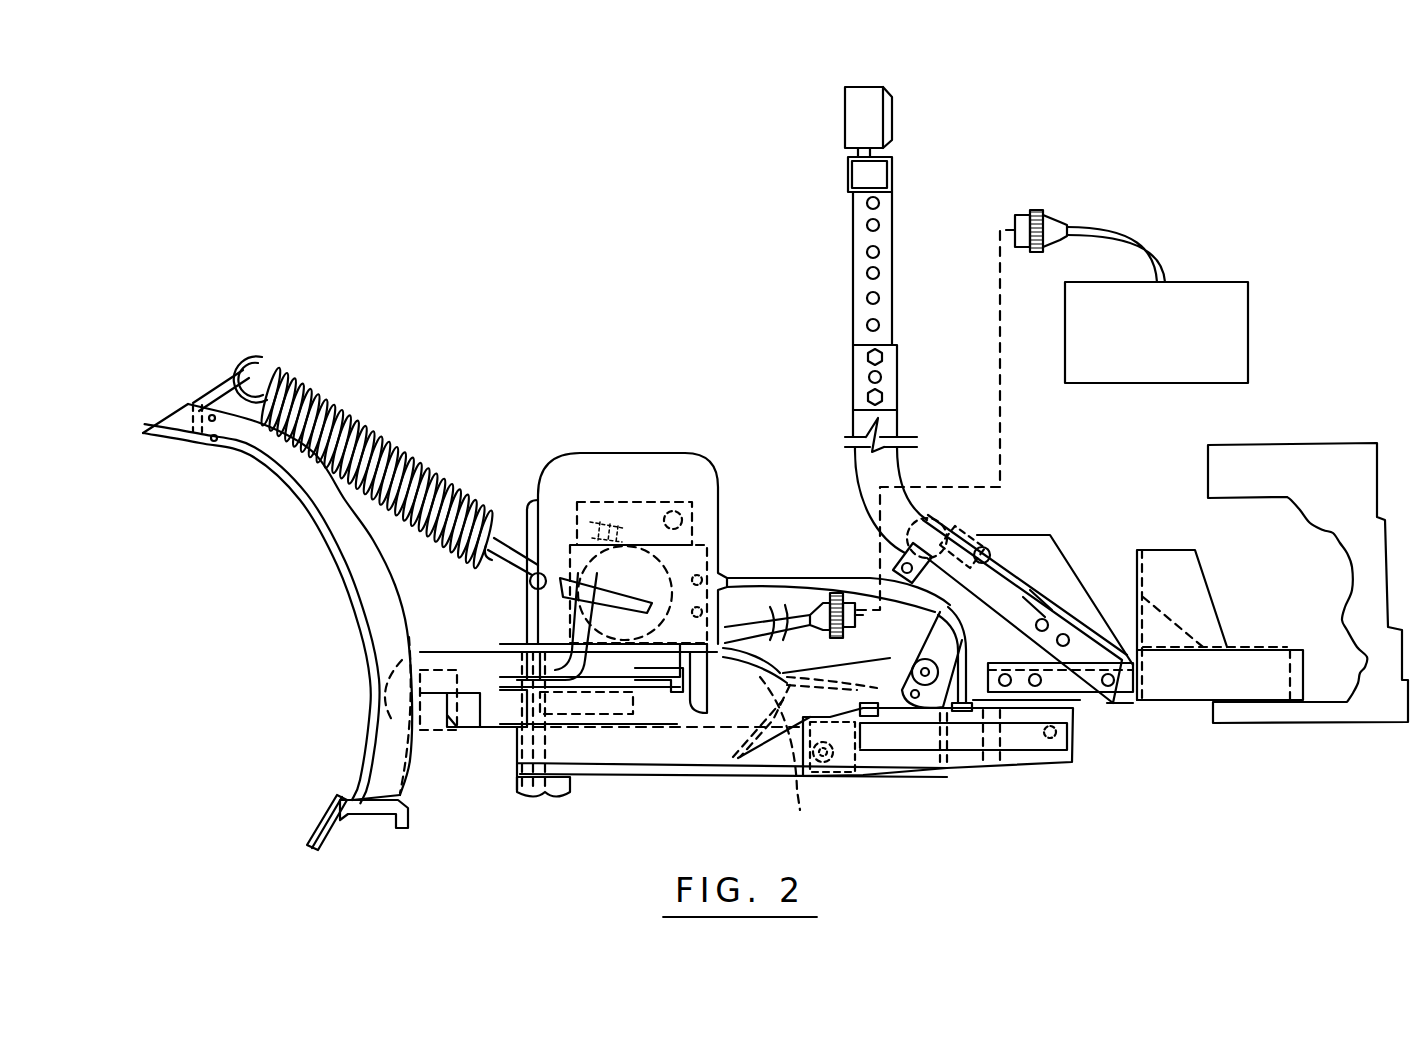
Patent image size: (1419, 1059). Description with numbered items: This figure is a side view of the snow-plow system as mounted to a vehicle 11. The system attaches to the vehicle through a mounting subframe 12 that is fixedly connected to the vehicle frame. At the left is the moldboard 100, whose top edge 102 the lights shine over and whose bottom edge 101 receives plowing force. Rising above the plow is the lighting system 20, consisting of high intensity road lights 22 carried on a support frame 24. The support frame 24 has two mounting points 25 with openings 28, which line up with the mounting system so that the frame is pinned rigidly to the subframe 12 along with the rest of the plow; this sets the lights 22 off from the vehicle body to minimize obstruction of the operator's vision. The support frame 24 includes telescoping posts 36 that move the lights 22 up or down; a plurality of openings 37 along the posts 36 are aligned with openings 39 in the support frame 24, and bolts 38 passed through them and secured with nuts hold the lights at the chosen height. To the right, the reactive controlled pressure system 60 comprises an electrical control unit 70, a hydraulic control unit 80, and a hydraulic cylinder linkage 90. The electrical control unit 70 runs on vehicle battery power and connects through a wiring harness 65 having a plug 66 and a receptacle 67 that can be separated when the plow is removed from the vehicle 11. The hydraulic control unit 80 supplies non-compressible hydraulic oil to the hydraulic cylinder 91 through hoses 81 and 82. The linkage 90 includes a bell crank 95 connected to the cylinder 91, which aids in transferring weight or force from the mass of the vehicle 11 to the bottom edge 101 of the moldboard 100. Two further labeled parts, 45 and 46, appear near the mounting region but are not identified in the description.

The vehicle 11 is at (1298, 440).
The mounting subframe 12 is at (1088, 563).
The lighting system 20 is at (893, 207).
The high intensity road lights 22 is at (892, 124).
The support frame 24 is at (905, 483).
The mounting point 25 is at (1128, 660).
The opening 28 is at (1122, 677).
The telescoping posts 36 is at (896, 328).
The openings 37 is at (866, 300).
The bolts 38 is at (883, 397).
The openings 39 is at (867, 397).
The mounting plate 45 is at (1115, 680).
The pivot pin 46 is at (988, 550).
The reactive controlled pressure system 60 is at (770, 512).
The electrical control wiring harness 65 is at (828, 628).
The plug 66 is at (792, 630).
The receptacle 67 is at (1022, 213).
The electrical control unit 70 is at (1163, 383).
The hydraulic control unit 80 is at (590, 452).
The hose 81 is at (748, 617).
The hose 82 is at (773, 675).
The hydraulic cylinder linkage 90 is at (815, 805).
The hydraulic cylinder 91 is at (912, 770).
The bell crank 95 is at (876, 667).
The moldboard 100 is at (362, 642).
The bottom edge 101 is at (310, 855).
The top edge 102 is at (173, 400).